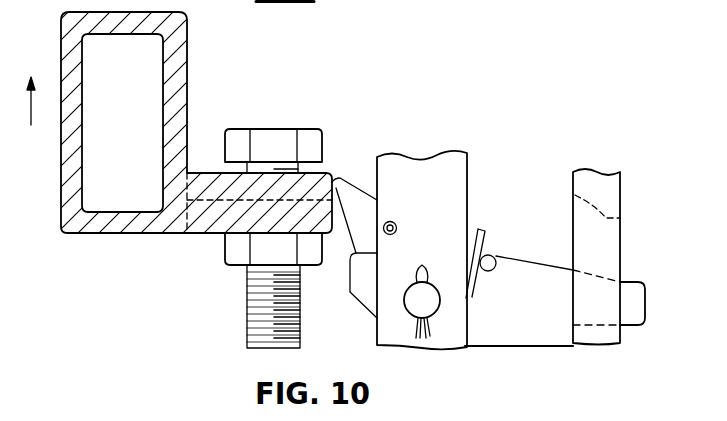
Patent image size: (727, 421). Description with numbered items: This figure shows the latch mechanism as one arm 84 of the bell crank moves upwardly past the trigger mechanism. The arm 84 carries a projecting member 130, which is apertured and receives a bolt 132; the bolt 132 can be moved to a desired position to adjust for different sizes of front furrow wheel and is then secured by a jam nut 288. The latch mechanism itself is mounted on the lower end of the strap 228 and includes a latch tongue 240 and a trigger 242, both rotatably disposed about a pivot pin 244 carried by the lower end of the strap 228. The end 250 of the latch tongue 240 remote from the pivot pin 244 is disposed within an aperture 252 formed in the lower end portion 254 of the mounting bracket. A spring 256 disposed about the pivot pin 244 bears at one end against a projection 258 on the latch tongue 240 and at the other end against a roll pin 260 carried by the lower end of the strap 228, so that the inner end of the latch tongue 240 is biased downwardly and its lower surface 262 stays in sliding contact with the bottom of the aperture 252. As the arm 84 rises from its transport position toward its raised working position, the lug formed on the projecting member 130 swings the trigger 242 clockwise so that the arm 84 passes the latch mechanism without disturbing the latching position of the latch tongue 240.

The arm 84 is at (68, 221).
The projecting member 130 is at (211, 229).
The bolt 132 is at (263, 138).
The jam nut 288 is at (318, 253).
The trigger 242 is at (348, 190).
The strap 228 is at (445, 161).
The roll pin 260 is at (394, 224).
The pivot pin 244 is at (430, 290).
The spring 256 is at (487, 228).
The projection 258 is at (492, 271).
The latch tongue 240 is at (539, 268).
The lower end portion 254 is at (613, 185).
The aperture 252 is at (617, 220).
The end of the latch tongue 250 is at (647, 301).
The lower surface 262 is at (526, 347).